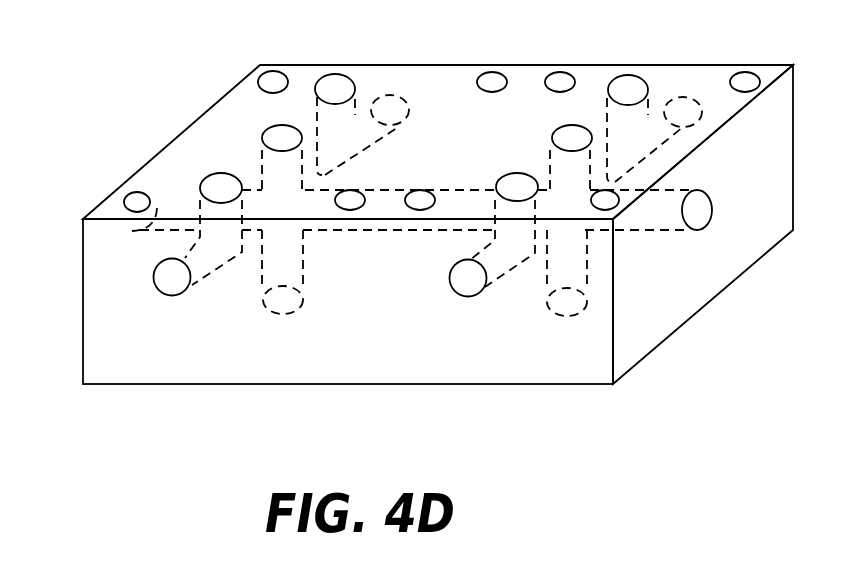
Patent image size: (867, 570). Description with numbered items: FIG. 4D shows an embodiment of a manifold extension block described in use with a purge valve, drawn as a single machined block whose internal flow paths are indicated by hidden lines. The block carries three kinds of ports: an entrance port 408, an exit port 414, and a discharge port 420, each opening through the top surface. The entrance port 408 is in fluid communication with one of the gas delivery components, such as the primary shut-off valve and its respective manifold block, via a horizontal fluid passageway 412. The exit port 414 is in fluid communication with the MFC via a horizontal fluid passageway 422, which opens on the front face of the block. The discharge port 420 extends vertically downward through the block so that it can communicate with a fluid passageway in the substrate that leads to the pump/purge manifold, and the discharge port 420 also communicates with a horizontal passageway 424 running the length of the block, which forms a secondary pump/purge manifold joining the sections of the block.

The entrance port 408 is at (334, 93).
The horizontal fluid passageway 412 is at (367, 108).
The exit port 414 is at (220, 187).
The discharge port 420 is at (281, 136).
The horizontal fluid passageway 422 is at (212, 248).
The horizontal passageway 424 is at (388, 212).